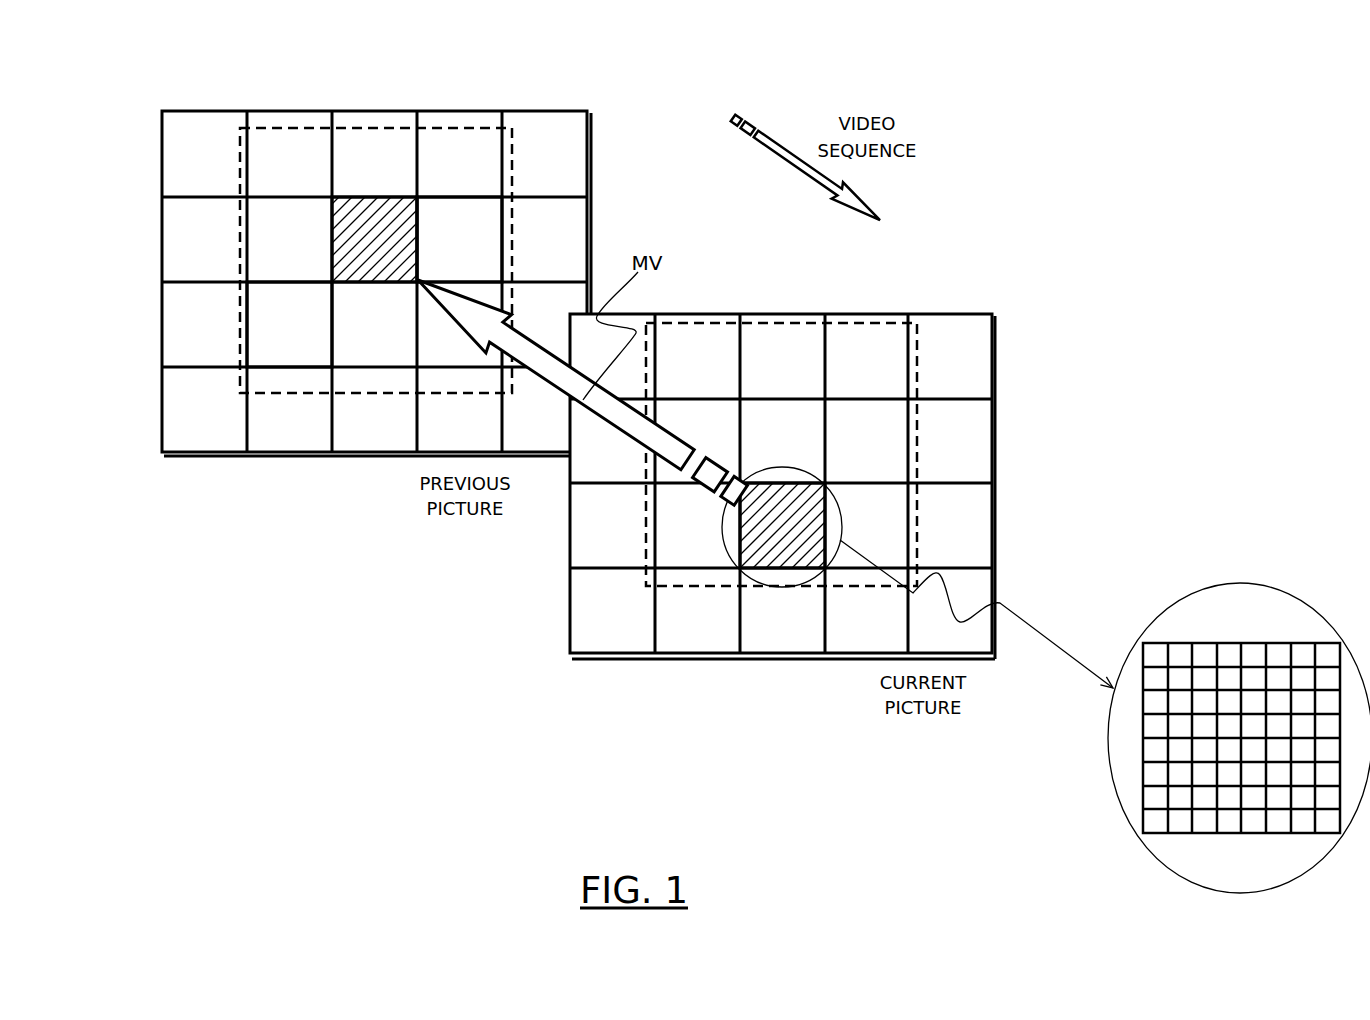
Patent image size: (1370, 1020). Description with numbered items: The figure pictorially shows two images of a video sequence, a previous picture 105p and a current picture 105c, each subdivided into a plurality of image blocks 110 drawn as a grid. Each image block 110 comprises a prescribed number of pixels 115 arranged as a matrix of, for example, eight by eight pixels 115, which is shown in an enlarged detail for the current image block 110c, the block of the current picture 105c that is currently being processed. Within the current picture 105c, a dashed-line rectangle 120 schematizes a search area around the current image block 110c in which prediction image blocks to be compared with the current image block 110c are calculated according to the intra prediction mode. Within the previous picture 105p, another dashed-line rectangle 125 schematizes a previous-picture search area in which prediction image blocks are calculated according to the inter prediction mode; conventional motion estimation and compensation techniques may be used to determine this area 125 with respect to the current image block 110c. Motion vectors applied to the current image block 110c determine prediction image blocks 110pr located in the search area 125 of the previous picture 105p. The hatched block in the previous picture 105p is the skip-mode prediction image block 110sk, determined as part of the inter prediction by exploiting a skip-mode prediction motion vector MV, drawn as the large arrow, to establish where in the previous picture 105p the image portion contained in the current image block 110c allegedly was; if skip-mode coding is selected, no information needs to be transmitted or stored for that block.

The previous picture 105p is at (340, 460).
The current picture 105c is at (760, 655).
The image block 110 is at (372, 123).
The prediction image block 110pr is at (431, 239).
The skip-mode prediction image block 110sk is at (343, 232).
The current image block 110c is at (723, 541).
The pixel 115 is at (1175, 653).
The current picture search area 120 is at (927, 520).
The previous picture search area 125 is at (303, 395).